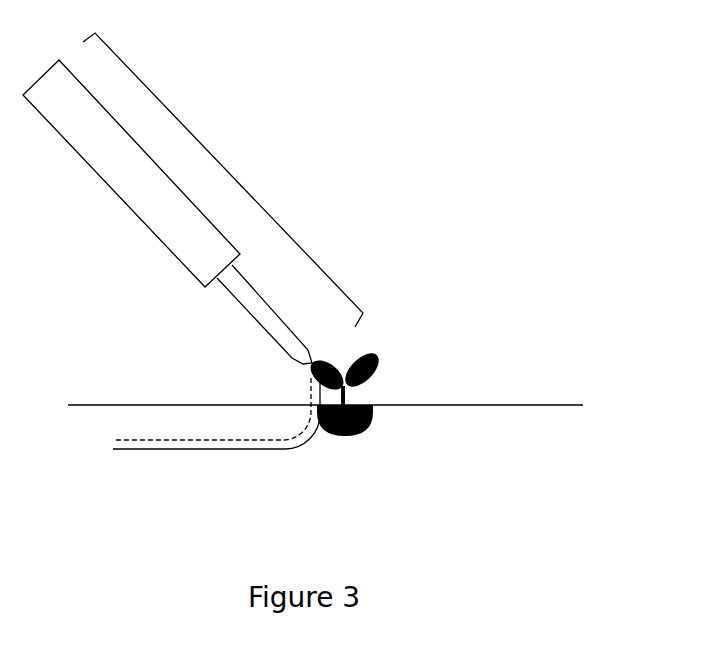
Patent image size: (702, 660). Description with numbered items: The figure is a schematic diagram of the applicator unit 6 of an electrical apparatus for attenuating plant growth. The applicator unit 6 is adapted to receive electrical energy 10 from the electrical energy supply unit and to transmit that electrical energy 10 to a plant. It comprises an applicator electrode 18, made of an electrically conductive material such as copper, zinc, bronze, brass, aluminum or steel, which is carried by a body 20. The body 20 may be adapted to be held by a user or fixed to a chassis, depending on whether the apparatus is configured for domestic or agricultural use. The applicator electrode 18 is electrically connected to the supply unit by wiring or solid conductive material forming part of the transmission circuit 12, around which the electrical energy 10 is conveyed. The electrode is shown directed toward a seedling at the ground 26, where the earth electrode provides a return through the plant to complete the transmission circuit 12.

The applicator unit 6 is at (230, 172).
The electrical energy 10 is at (200, 449).
The transmission circuit 12 is at (150, 440).
The applicator electrode 18 is at (258, 310).
The body 20 is at (123, 165).
The ground 26 is at (547, 405).